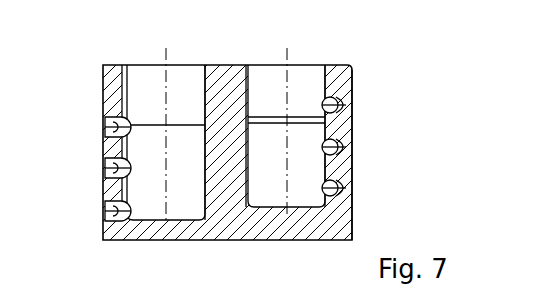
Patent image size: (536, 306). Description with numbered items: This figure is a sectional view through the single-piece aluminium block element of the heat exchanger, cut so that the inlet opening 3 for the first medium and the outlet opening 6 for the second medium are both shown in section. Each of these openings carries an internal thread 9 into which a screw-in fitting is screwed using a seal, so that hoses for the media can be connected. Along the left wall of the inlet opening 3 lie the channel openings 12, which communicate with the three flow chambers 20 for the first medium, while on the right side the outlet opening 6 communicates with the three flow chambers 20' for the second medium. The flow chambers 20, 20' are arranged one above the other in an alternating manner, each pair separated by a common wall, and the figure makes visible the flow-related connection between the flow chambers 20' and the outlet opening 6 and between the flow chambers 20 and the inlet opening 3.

The inlet opening 3 is at (143, 72).
The internal thread 9 is at (250, 85).
The outlet opening 6 is at (318, 64).
The channel openings 12 is at (103, 115).
The flow chambers 20 is at (79, 179).
The flow chambers 20' is at (386, 146).